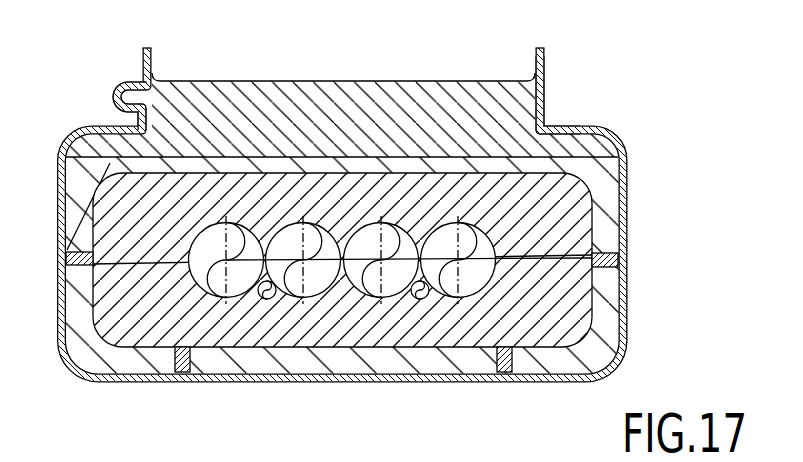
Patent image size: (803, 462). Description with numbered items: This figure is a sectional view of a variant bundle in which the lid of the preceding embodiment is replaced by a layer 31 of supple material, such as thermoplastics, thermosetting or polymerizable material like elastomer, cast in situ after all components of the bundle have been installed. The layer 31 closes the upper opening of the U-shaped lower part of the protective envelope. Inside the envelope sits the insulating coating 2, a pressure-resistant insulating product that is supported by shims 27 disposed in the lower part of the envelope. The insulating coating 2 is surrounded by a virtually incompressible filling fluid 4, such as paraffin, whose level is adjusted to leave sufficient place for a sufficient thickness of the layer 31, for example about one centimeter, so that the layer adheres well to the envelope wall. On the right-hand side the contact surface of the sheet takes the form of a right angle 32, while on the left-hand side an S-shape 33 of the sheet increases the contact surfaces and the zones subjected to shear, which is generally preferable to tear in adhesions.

The insulating coating 2 is at (570, 303).
The incompressible fluid 4 is at (600, 185).
The shims 27 is at (606, 251).
The layer of supple material 31 is at (323, 112).
The right angle 32 is at (513, 98).
The S-shape 33 is at (162, 109).